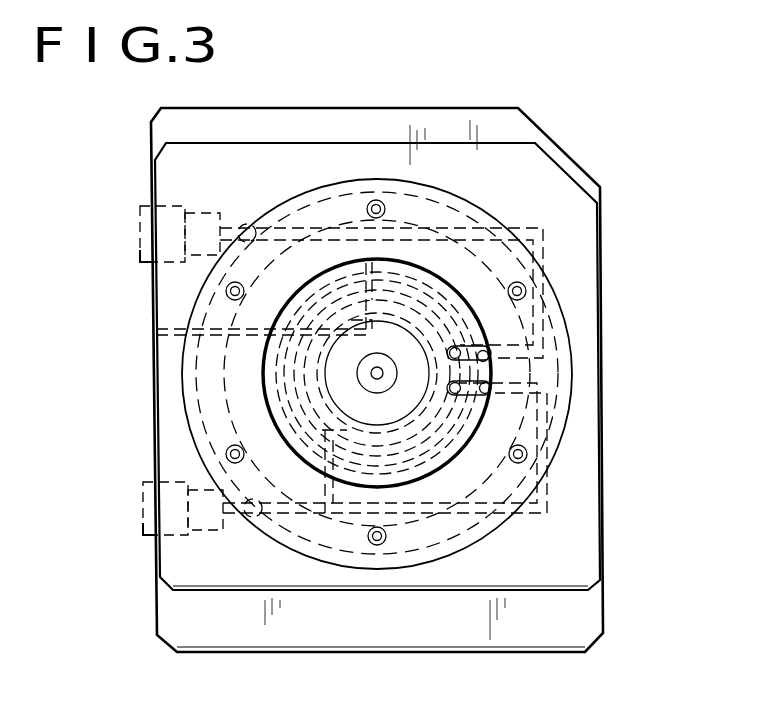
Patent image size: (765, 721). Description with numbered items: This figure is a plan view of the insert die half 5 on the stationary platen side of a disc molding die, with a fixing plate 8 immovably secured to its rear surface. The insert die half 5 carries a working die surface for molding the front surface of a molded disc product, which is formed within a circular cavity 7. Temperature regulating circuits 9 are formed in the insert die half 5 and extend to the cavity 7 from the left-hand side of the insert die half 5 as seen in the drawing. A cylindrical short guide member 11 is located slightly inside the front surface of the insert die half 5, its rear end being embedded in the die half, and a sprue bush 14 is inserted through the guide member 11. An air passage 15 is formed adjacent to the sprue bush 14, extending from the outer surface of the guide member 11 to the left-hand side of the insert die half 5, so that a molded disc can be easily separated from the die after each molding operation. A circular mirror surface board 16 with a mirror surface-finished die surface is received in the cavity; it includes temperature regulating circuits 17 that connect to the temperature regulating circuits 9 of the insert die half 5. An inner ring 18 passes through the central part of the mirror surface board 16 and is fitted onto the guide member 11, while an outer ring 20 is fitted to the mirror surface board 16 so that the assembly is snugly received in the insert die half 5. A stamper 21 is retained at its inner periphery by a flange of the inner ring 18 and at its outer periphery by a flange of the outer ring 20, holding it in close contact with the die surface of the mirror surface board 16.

The insert die half 5 is at (351, 146).
The cavity 7 is at (548, 320).
The fixing plate 8 is at (262, 122).
The temperature regulating circuits 9 is at (530, 275).
The guide member 11 is at (342, 360).
The sprue bush 14 is at (312, 370).
The air passage 15 is at (165, 329).
The mirror surface board 16 is at (492, 288).
The temperature regulating circuits 17 is at (432, 440).
The inner ring 18 is at (363, 380).
The outer ring 20 is at (410, 188).
The stamper 21 is at (485, 372).